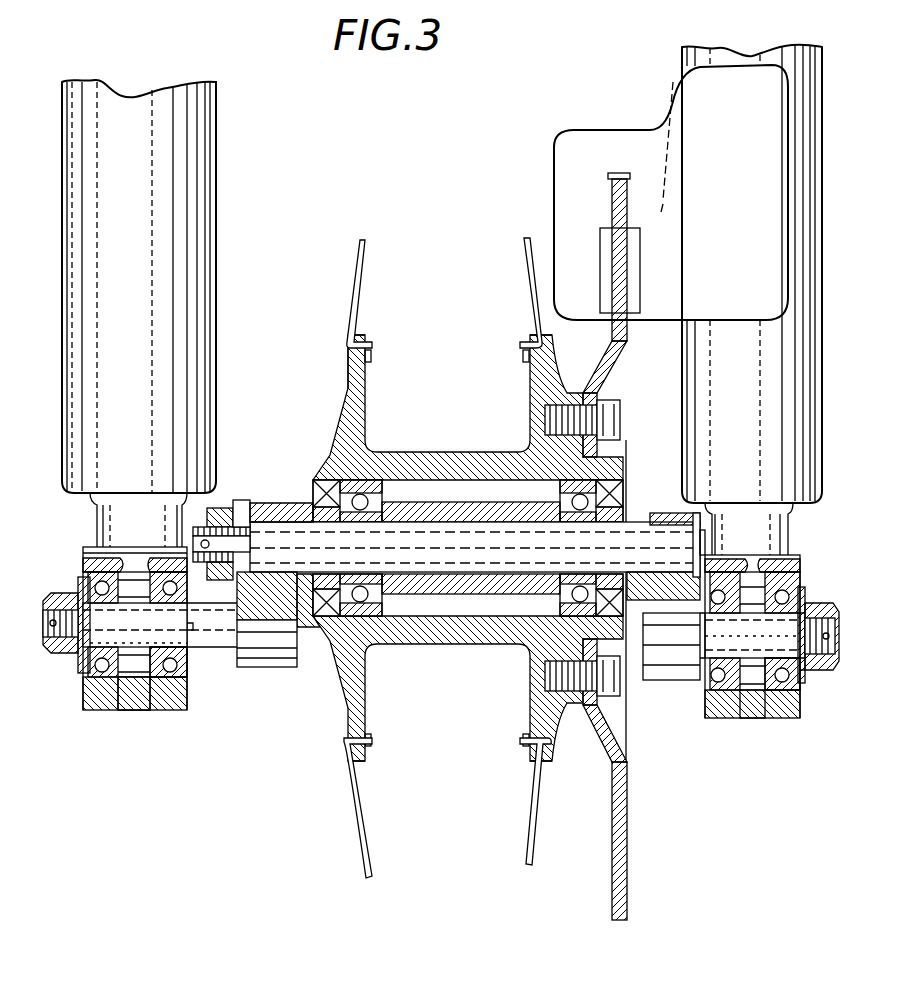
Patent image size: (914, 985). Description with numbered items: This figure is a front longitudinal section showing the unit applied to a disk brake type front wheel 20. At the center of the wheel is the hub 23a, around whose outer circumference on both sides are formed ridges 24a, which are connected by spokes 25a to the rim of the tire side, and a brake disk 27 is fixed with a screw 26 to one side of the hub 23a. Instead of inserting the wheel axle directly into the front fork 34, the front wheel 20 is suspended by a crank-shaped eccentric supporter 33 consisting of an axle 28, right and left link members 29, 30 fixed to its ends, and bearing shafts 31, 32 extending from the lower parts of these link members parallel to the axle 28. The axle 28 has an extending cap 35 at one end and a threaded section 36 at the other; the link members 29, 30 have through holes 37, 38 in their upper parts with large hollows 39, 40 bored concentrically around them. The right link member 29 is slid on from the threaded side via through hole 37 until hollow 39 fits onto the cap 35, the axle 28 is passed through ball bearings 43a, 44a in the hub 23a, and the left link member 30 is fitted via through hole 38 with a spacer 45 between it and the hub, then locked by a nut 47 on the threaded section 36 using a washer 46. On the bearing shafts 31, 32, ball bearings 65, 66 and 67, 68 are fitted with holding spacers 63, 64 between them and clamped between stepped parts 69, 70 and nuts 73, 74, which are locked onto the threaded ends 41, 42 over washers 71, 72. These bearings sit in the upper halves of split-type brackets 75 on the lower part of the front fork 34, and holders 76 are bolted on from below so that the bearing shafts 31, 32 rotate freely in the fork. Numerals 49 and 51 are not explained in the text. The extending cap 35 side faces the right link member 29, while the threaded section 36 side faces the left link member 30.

The front wheel 20 is at (392, 236).
The hub 23a is at (435, 470).
The ridges 24a is at (346, 392).
The spokes 25a is at (356, 290).
The screw 26 is at (537, 425).
The brake disk 27 is at (612, 206).
The axle 28 is at (428, 560).
The right side link member 29 is at (660, 640).
The left side link member 30 is at (277, 670).
The bearing shaft 31 is at (757, 650).
The bearing shaft 32 is at (146, 690).
The eccentric supporter 33 is at (512, 560).
The front fork 34 is at (212, 214).
The extending cap 35 is at (812, 367).
The threaded section 36 is at (218, 580).
The through hole 37 is at (654, 512).
The through hole 38 is at (281, 572).
The hollow 39 is at (693, 545).
The hollow 40 is at (245, 500).
The threaded end 41 is at (838, 627).
The threaded end 42 is at (47, 610).
The ball bearing 43a is at (578, 508).
The ball bearing 44a is at (355, 600).
The spacer 45 is at (305, 504).
The washer 46 is at (233, 510).
The nut 47 is at (200, 522).
The collar 49 is at (708, 547).
The inner sleeve 51 is at (252, 540).
The holding spacer 63 is at (747, 607).
The holding spacer 64 is at (137, 587).
The ball bearing 65 is at (783, 684).
The ball bearing 66 is at (718, 684).
The ball bearing 67 is at (172, 690).
The ball bearing 68 is at (103, 680).
The stepped part 69 is at (713, 640).
The stepped part 70 is at (138, 638).
The washer 71 is at (805, 592).
The washer 72 is at (83, 582).
The nut 73 is at (812, 670).
The nut 74 is at (56, 653).
The split-type bracket 75 is at (95, 555).
The holder 76 is at (116, 710).